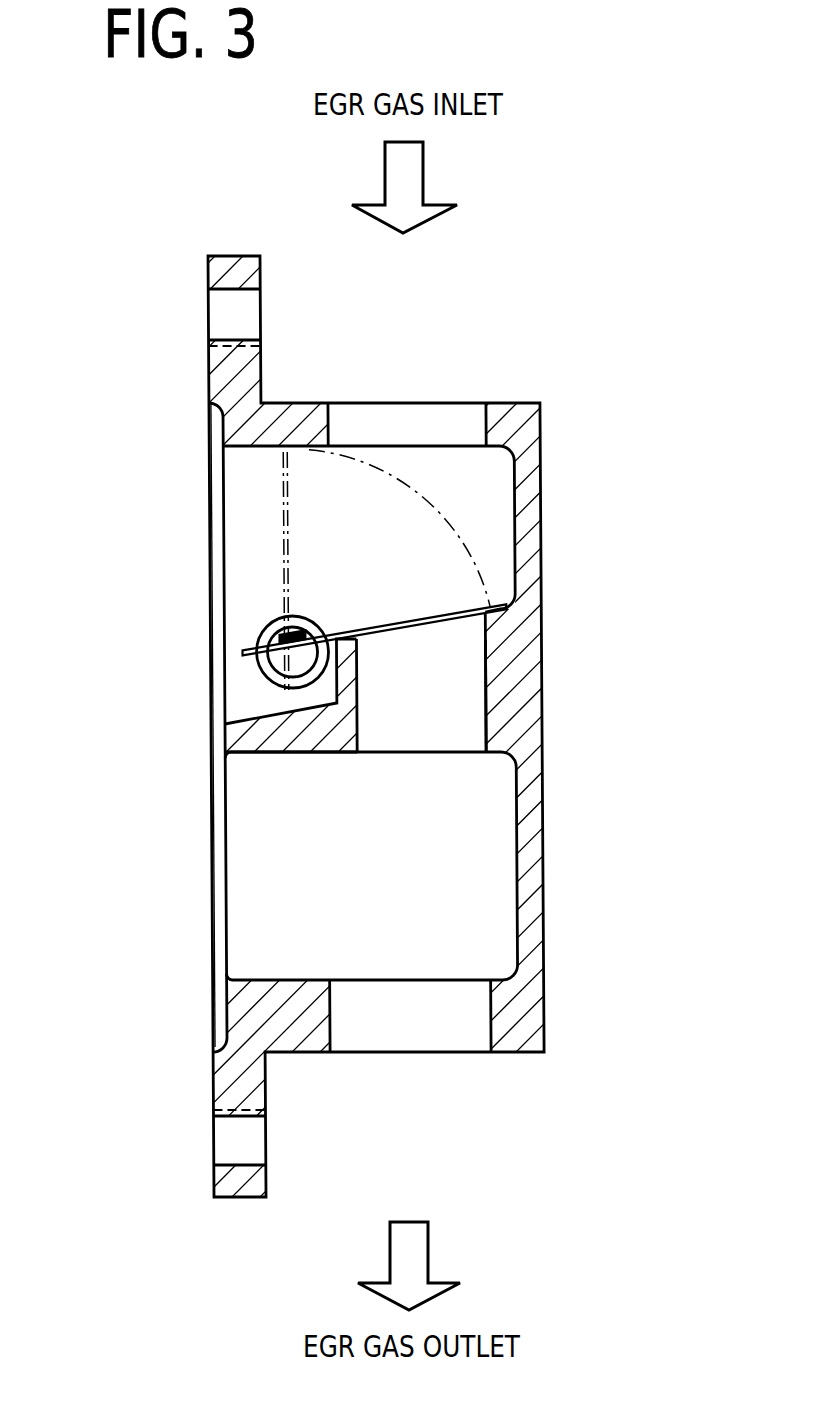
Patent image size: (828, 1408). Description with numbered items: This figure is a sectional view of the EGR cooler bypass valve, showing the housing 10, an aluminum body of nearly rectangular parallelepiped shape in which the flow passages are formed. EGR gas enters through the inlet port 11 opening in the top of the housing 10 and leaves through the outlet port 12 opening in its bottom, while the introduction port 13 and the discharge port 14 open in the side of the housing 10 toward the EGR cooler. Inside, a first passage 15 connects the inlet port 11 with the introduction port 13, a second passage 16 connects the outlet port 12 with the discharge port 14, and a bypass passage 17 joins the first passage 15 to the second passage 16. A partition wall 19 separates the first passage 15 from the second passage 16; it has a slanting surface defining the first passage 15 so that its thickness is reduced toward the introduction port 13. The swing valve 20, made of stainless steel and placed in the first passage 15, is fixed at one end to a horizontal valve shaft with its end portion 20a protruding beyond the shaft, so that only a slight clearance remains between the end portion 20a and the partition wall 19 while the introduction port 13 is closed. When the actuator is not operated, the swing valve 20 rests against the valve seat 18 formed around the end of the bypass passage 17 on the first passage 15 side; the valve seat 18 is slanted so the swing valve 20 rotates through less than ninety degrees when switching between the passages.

The housing 10 is at (548, 514).
The inlet port 11 is at (445, 415).
The outlet port 12 is at (462, 1035).
The introduction port 13 is at (213, 562).
The discharge port 14 is at (218, 903).
The first passage 15 is at (472, 463).
The second passage 16 is at (455, 923).
The bypass passage 17 is at (443, 735).
The valve seat 18 is at (358, 682).
The partition wall 19 is at (248, 740).
The swing valve 20 is at (428, 613).
The end portion of the swing valve 20a is at (285, 695).